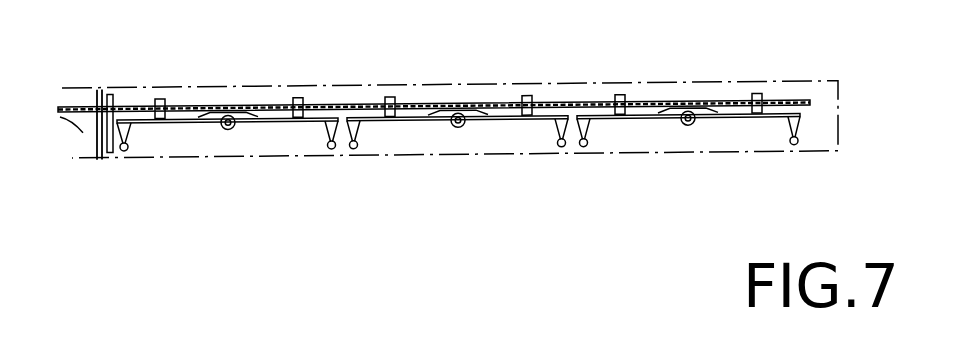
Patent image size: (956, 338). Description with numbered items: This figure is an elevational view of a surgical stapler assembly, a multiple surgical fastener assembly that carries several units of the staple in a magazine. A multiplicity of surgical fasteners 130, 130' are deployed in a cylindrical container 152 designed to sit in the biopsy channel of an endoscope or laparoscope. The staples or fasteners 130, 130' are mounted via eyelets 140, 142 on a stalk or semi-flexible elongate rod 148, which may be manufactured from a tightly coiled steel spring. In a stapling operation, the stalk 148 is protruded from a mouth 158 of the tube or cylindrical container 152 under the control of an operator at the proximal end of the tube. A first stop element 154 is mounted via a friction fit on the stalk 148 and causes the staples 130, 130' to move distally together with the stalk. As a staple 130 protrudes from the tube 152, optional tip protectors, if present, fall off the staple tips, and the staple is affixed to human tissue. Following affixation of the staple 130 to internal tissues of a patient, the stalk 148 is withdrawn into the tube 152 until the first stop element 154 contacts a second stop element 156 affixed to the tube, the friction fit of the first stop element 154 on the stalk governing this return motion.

The surgical fastener 130 is at (688, 168).
The surgical fastener 130' is at (457, 169).
The eyelet 140 is at (626, 92).
The eyelet 142 is at (761, 92).
The stalk 148 is at (813, 100).
The cylindrical container 152 is at (436, 84).
The first stop element 154 is at (119, 158).
The second stop element 156 is at (106, 90).
The mouth 158 is at (838, 132).